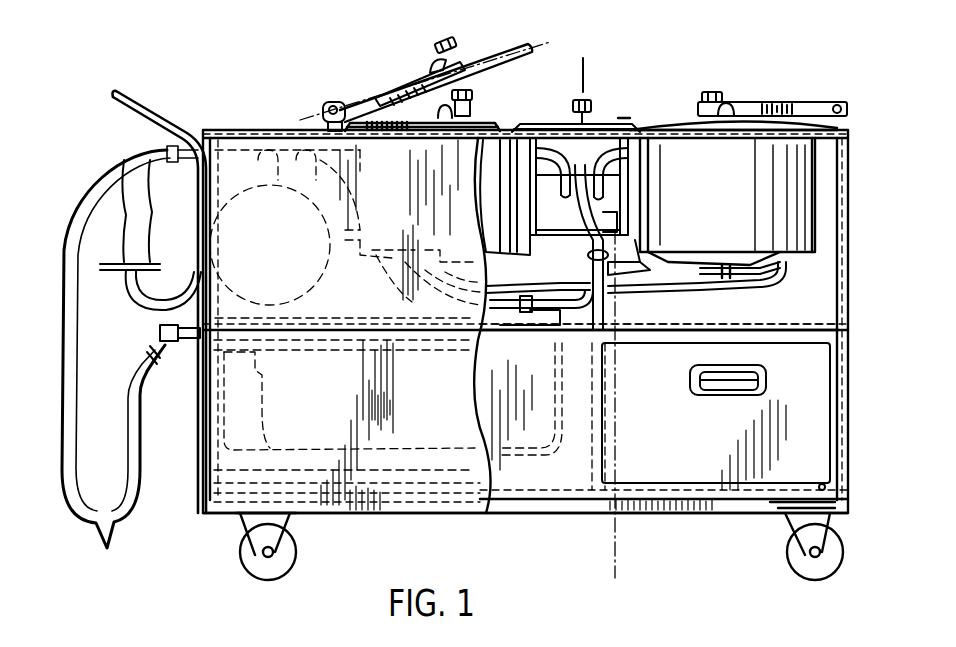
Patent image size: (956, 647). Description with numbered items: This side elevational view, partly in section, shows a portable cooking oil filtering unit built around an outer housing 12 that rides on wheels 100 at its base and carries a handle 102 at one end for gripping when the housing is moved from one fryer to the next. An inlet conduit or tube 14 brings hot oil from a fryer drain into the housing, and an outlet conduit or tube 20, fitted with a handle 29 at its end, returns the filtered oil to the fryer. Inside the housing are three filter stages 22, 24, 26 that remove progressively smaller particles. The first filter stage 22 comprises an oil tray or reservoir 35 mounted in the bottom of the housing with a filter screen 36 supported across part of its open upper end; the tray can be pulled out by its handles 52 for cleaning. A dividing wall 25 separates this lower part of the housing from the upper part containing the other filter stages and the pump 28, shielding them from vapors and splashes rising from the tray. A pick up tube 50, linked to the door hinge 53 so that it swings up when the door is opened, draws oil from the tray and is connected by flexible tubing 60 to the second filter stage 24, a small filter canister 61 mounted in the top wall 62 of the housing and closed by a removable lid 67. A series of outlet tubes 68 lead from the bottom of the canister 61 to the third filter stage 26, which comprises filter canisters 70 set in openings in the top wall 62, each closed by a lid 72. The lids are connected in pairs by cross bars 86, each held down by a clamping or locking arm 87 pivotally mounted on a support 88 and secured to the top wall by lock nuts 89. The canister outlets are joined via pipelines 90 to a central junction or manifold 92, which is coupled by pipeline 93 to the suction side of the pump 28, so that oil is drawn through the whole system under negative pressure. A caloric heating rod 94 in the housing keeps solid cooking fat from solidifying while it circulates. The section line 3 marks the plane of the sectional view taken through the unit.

The outer housing 12 is at (843, 330).
The inlet conduit or tube 14 is at (192, 340).
The outlet conduit or tube 20 is at (72, 350).
The first filter stage 22 is at (548, 482).
The second filter stage or chemical additive station 24 is at (556, 120).
The dividing wall 25 is at (740, 322).
The third filter stage 26 is at (770, 259).
The pump 28 is at (336, 272).
The handle 29 is at (148, 214).
The oil tray or reservoir 35 is at (820, 443).
The filter screen 36 is at (285, 450).
The pick up tube 50 is at (606, 392).
The handles 52 is at (700, 392).
The door hinge 53 is at (442, 334).
The flexible tubing 60 is at (590, 222).
The filter canister 61 is at (632, 166).
The top wall 62 is at (752, 135).
The removable closure or lid 67 is at (598, 112).
The outlet tubes 68 is at (632, 150).
The filter canisters 70 is at (808, 212).
The lid 72 is at (524, 48).
The cross bars 86 is at (732, 106).
The clamping or locking arm 87 is at (781, 100).
The support 88 is at (842, 106).
The lock nuts 89 is at (712, 92).
The pipelines 90 is at (488, 274).
The central junction or manifold 92 is at (578, 286).
The pipeline 93 is at (552, 336).
The caloric heating rod 94 is at (628, 242).
The wheels 100 is at (292, 553).
The handle 102 is at (132, 103).
The section line 3- 3 is at (583, 68).